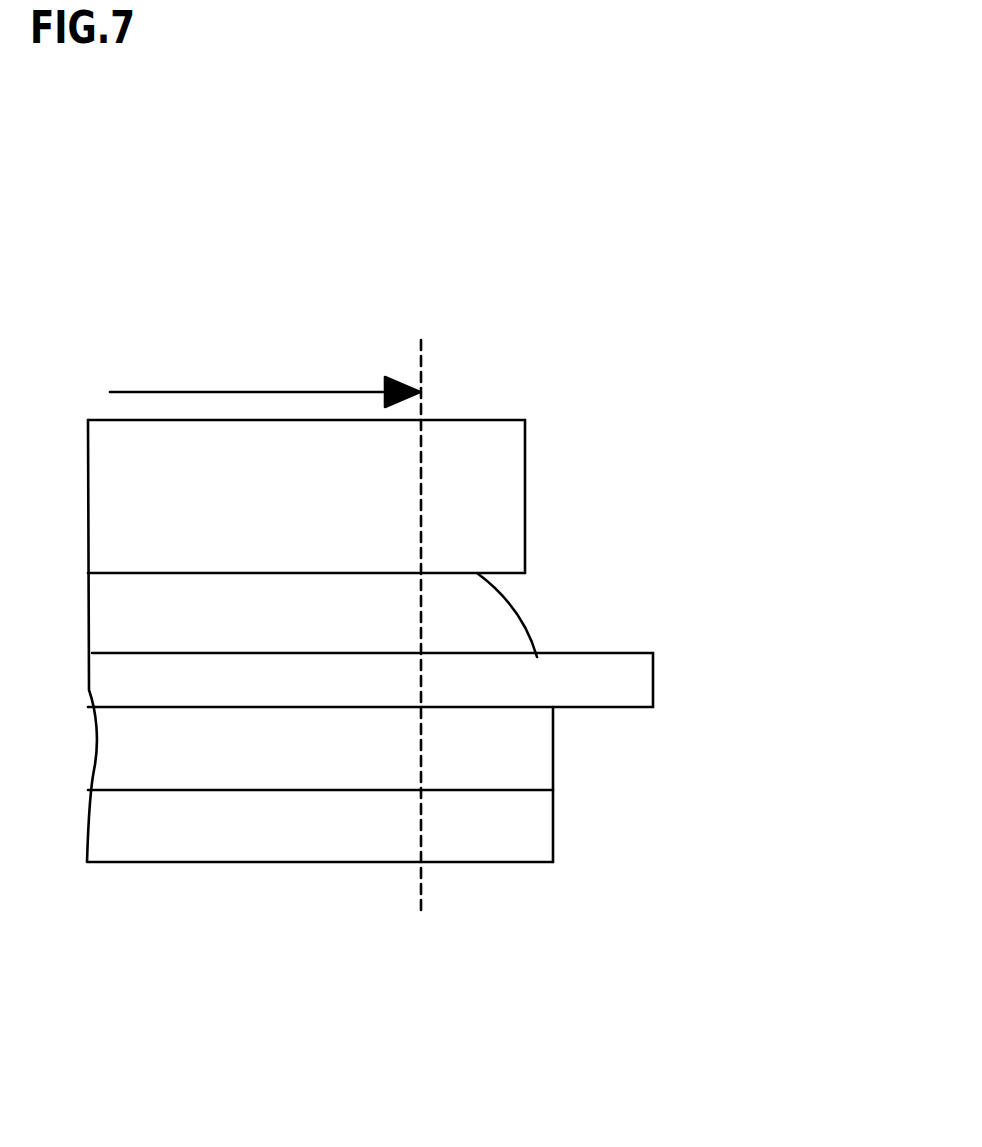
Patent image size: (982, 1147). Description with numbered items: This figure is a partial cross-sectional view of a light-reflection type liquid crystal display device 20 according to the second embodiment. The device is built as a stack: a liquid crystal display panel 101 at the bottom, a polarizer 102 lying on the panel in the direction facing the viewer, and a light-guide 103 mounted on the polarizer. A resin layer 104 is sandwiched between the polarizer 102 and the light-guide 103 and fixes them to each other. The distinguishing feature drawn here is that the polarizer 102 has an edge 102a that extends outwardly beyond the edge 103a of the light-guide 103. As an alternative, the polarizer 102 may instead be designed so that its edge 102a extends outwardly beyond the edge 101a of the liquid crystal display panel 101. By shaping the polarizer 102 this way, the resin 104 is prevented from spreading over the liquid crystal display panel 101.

The light-reflection type liquid crystal display device 20 is at (131, 283).
The liquid crystal display panel 101 is at (455, 838).
The edge of the liquid crystal display panel 101a is at (553, 835).
The polarizer 102 is at (595, 688).
The edge of the polarizer 102a is at (653, 680).
The light-guide 103 is at (447, 445).
The edge of the light-guide 103a is at (525, 452).
The resin layer 104 is at (498, 628).